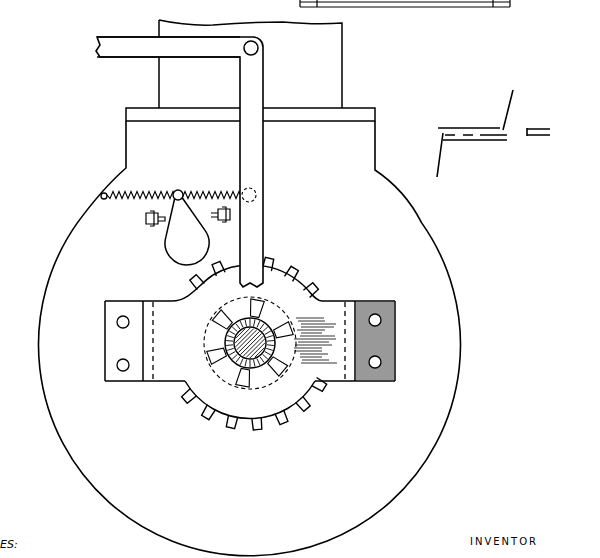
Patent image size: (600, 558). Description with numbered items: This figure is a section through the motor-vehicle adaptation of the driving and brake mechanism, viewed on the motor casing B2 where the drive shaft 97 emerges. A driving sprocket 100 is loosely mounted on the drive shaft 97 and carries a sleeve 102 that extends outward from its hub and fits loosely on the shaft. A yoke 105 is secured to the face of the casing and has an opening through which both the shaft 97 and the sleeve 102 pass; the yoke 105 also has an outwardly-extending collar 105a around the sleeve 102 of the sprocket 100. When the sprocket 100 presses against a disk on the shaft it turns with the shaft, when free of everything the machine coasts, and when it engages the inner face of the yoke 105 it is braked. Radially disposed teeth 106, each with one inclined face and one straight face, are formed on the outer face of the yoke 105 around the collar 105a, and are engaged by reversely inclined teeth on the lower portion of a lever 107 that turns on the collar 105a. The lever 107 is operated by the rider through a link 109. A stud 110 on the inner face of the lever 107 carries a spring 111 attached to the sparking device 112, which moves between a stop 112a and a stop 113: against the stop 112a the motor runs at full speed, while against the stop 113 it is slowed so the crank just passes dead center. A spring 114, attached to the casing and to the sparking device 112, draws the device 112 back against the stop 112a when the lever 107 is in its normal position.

The drive shaft 97 is at (243, 349).
The driving sprocket 100 is at (301, 284).
The sleeve 102 is at (274, 347).
The yoke 105 is at (300, 329).
The collar 105a is at (226, 338).
The teeth 106 is at (285, 322).
The lever 107 is at (257, 143).
The link 109 is at (202, 45).
The stud 110 is at (257, 193).
The spring 111 is at (225, 192).
The sparking device 112 is at (187, 230).
The stop 112a is at (148, 226).
The stop 113 is at (221, 224).
The spring 114 is at (150, 190).
The casing B2 is at (332, 218).